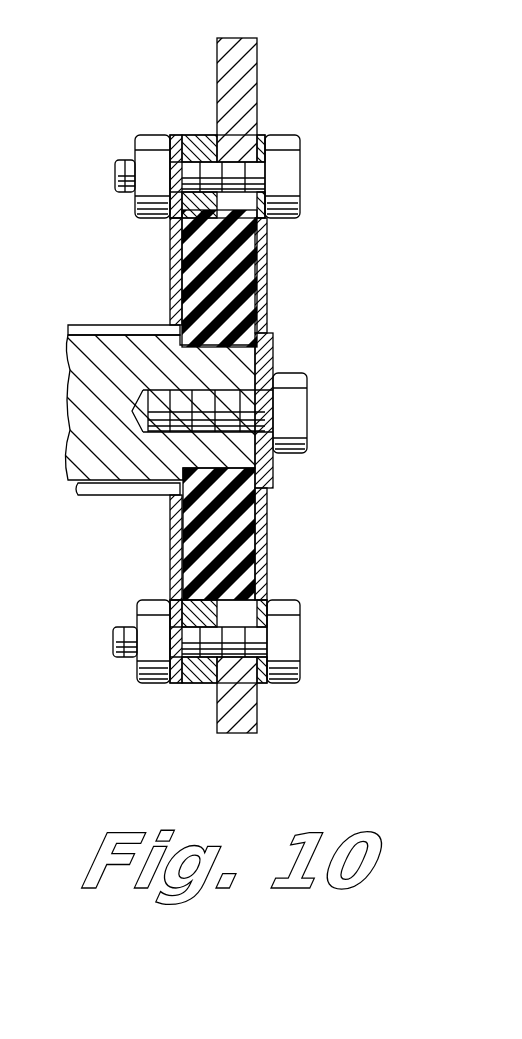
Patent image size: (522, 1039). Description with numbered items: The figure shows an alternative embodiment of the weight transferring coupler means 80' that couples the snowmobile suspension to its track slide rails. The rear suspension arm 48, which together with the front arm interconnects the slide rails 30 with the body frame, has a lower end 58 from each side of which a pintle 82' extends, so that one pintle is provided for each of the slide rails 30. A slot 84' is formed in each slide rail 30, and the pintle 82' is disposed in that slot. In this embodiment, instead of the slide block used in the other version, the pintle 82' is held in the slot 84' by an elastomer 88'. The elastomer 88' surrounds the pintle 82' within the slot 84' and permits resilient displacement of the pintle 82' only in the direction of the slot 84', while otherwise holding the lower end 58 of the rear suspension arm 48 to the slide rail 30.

The slide rail 30 is at (233, 717).
The rear suspension arm 48 is at (90, 325).
The lower end 58 is at (117, 500).
The weight transferring coupler means 80' is at (249, 409).
The pintle 82' is at (291, 409).
The slot 84' is at (268, 534).
The elastomer 88' is at (266, 278).